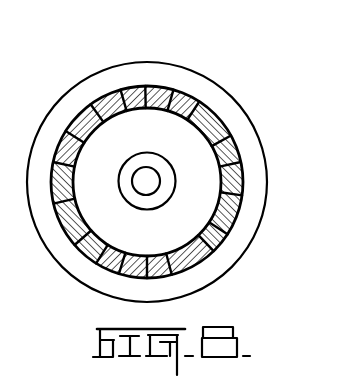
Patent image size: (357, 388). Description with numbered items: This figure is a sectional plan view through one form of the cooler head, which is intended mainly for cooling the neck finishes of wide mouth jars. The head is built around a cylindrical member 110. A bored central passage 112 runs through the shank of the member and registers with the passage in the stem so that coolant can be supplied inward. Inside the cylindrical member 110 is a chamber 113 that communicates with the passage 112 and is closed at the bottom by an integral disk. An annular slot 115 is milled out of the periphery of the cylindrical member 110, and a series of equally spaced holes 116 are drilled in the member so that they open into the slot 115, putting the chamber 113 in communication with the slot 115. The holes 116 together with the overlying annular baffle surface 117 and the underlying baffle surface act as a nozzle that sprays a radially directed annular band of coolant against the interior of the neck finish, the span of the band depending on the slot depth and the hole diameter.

The cylindrical member 110 is at (126, 86).
The bored central passage 112 is at (145, 182).
The chamber 113 is at (154, 135).
The annular slot 115 is at (305, 100).
The holes 116 is at (181, 88).
The overlying annular baffle surface 117 is at (319, 148).